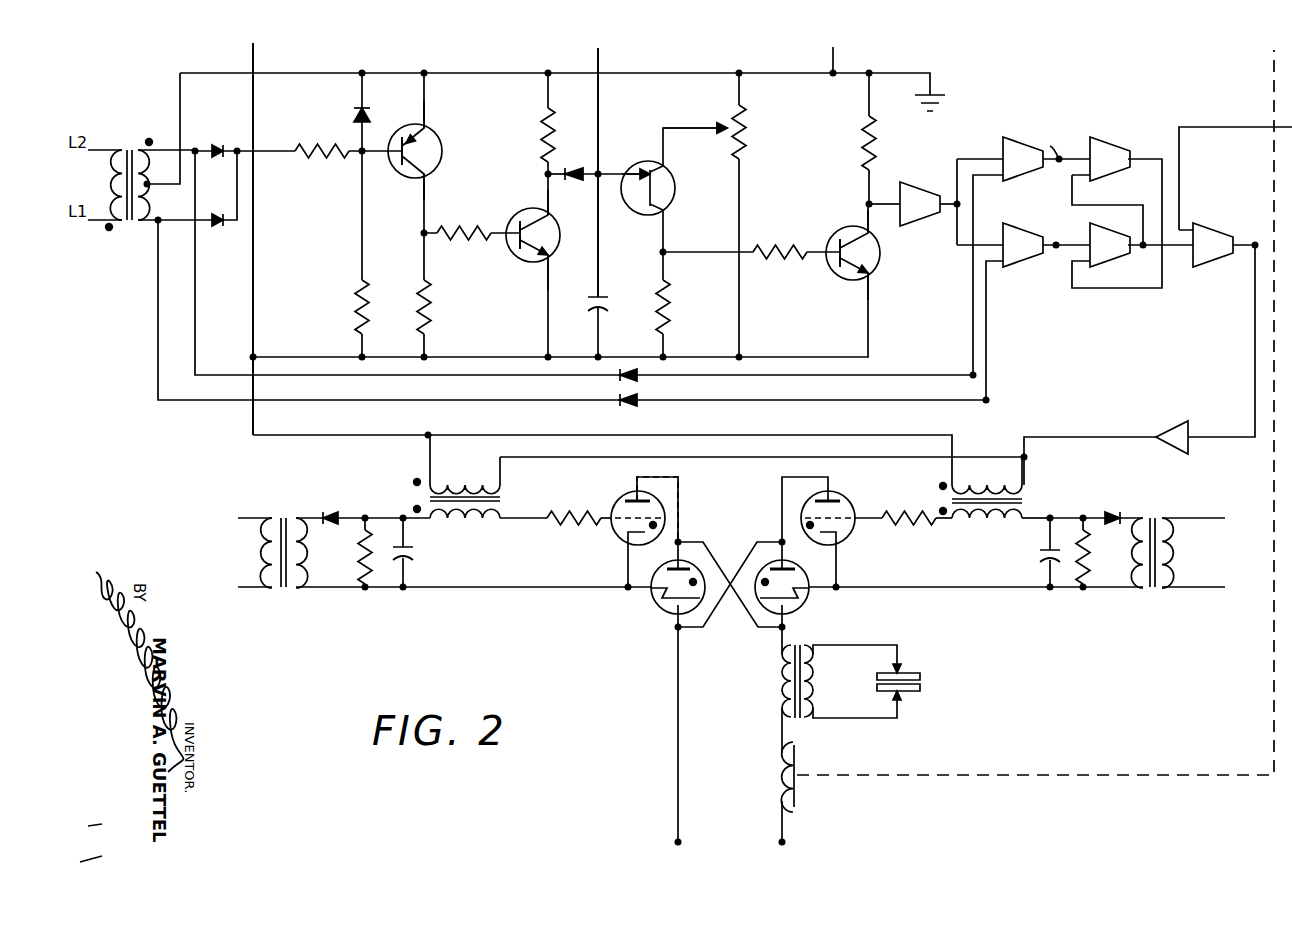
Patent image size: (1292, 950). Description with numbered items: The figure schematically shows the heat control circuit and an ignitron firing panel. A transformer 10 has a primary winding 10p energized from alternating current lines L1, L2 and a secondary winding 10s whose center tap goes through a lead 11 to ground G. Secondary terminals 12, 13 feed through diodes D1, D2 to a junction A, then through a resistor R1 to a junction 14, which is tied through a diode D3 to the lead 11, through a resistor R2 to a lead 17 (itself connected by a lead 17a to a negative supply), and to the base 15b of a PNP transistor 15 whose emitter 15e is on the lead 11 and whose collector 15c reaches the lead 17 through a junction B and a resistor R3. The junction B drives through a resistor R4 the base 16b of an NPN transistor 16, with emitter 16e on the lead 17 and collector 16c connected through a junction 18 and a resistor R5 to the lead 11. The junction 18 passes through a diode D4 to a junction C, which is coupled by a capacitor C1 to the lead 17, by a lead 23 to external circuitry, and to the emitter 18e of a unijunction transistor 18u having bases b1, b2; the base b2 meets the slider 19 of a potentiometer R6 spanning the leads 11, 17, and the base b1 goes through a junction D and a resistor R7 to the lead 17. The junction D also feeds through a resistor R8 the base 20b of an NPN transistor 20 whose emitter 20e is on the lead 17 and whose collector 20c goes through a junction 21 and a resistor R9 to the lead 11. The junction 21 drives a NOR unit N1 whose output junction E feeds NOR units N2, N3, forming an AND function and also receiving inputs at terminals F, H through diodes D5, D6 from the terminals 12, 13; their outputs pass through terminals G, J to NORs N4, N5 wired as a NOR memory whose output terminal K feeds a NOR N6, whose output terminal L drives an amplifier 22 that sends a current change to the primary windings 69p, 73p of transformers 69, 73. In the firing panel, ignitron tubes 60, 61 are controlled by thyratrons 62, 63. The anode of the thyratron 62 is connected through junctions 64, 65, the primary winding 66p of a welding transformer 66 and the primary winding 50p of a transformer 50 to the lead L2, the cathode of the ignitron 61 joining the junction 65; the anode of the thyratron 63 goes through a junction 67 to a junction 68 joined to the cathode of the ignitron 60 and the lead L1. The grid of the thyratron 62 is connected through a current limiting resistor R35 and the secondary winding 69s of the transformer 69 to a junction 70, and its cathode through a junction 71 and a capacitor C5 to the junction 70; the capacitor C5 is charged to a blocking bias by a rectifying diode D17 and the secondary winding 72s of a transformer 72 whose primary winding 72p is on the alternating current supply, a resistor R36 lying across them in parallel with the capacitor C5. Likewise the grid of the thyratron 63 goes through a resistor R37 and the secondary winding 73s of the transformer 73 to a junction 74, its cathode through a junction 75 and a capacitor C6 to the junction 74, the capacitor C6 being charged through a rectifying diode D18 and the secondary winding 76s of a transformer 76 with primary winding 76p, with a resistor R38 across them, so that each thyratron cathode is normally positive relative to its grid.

The transformer 10 is at (132, 177).
The primary winding 10p is at (111, 184).
The secondary winding 10s is at (146, 192).
The lead 11 is at (217, 73).
The output terminal 12 is at (579, 251).
The output terminal 13 is at (157, 222).
The junction 14 is at (360, 154).
The PNP type transistor 15 is at (422, 153).
The base 15b is at (398, 165).
The collector electrode 15c is at (435, 170).
The emitter electrode 15e is at (438, 133).
The NPN type transistor 16 is at (541, 265).
The base electrode 16b is at (522, 255).
The collector electrode 16c is at (551, 221).
The emitter electrode 16e is at (552, 254).
The lead 17 is at (307, 357).
The lead 17a is at (253, 290).
The junction 18 is at (546, 176).
The unijunction type transistor 18u is at (672, 187).
The emitter electrode 18e is at (636, 203).
The base electrode b1 is at (674, 205).
The base electrode b2 is at (672, 174).
The slider 19 is at (722, 125).
The NPN type transistor 20 is at (865, 280).
The base electrode 20b is at (839, 262).
The collector electrode 20c is at (880, 239).
The emitter electrode 20e is at (883, 271).
The junction 21 is at (866, 205).
The amplifier 22 is at (1160, 433).
The lead 23 is at (599, 108).
The transformer 50 is at (1005, 446).
The primary winding 50p is at (771, 776).
The ignitron tube 60 is at (652, 604).
The ignitron tube 61 is at (800, 612).
The thyratron 62 is at (625, 498).
The thyratron 63 is at (844, 502).
The junction 64 is at (678, 542).
The junction 65 is at (780, 630).
The welding transformer 66 is at (830, 687).
The primary winding 66p is at (774, 680).
The junction 67 is at (779, 542).
The junction 68 is at (676, 630).
The transformer 69 is at (475, 492).
The primary winding 69p is at (436, 487).
The secondary winding 69s is at (510, 492).
The junction 70 is at (402, 516).
The junction 71 is at (406, 590).
The transformer 72 is at (445, 570).
The primary winding 72p is at (274, 553).
The secondary winding 72s is at (308, 548).
The transformer 73 is at (999, 505).
The primary winding 73p is at (962, 487).
The secondary winding 73s is at (968, 523).
The junction 74 is at (1052, 515).
The junction 75 is at (1050, 590).
The transformer 76 is at (1161, 570).
The primary winding 76p is at (1173, 556).
The secondary winding 76s is at (1138, 549).
The resistor R1 is at (346, 148).
The resistor R2 is at (354, 307).
The resistor R3 is at (429, 307).
The resistor R4 is at (486, 228).
The resistor R5 is at (540, 130).
The potentiometer resistor R6 is at (748, 131).
The resistor R7 is at (670, 307).
The resistor R8 is at (800, 246).
The resistor R9 is at (862, 144).
The current limiting resistor R35 is at (586, 525).
The resistor R36 is at (360, 560).
The current limiting resistor R37 is at (920, 530).
The resistor R38 is at (1087, 565).
The capacitor C1 is at (601, 298).
The capacitor C5 is at (414, 561).
The capacitor C6 is at (1040, 560).
The diode D1 is at (212, 150).
The diode D2 is at (222, 226).
The diode D3 is at (354, 112).
The diode D4 is at (590, 172).
The diode D5 is at (640, 380).
The diode D6 is at (640, 406).
The rectifying diode D17 is at (332, 512).
The rectifying diode D18 is at (1110, 513).
The NOR unit N1 is at (928, 204).
The NOR unit N2 is at (1046, 155).
The NOR unit N3 is at (1046, 245).
The NOR N4 is at (1117, 212).
The NOR N5 is at (1141, 245).
The NOR N6 is at (1235, 197).
The common junction A is at (236, 153).
The junction B is at (424, 233).
The junction C is at (599, 174).
The junction D is at (666, 251).
The junction E is at (956, 202).
The terminal F is at (970, 373).
The ground G is at (942, 92).
The terminal H is at (987, 402).
The terminal J is at (1055, 250).
The terminal K is at (1143, 250).
The terminal L is at (1254, 250).
The line L1 is at (676, 844).
The line L2 is at (782, 844).